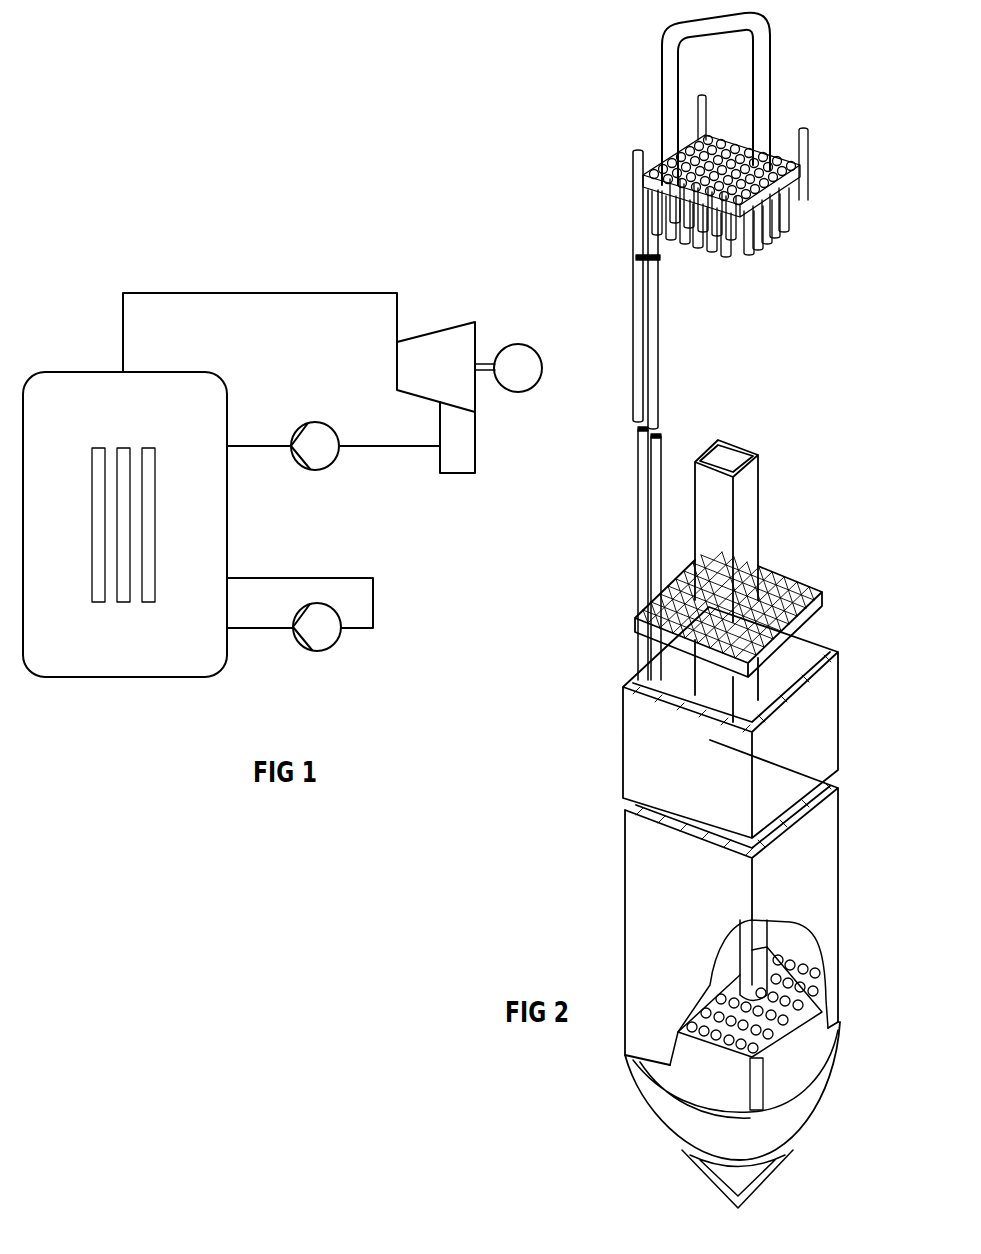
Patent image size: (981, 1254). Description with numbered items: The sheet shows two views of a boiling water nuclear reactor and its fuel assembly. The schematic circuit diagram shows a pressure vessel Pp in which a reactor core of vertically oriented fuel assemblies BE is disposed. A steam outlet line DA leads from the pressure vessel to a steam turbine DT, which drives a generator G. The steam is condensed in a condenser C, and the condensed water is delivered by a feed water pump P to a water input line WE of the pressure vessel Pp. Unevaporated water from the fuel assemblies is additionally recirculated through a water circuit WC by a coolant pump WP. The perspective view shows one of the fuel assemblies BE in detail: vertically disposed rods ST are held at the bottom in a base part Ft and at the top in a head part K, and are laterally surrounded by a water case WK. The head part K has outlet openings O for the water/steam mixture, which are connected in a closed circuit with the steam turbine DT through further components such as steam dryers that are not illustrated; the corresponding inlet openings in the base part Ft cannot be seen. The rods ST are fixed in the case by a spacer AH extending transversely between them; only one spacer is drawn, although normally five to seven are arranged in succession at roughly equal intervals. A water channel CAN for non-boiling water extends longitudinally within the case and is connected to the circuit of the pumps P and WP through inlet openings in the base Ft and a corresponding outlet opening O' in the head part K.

In FIG. 1, the pressure vessel Pp is at (130, 678).
In FIG. 1, the fuel assemblies BE is at (156, 526).
In FIG. 1, the steam outlet line DA is at (252, 293).
In FIG. 1, the steam turbine DT is at (437, 332).
In FIG. 1, the generator G is at (531, 330).
In FIG. 1, the condenser C is at (477, 444).
In FIG. 1, the water input line WE is at (242, 446).
In FIG. 1, the feed water pump P is at (322, 423).
In FIG. 1, the water circuit WC is at (315, 578).
In FIG. 1, the coolant pump WP is at (325, 651).
In FIG. 2, the head part K is at (665, 160).
In FIG. 2, the outlet openings O is at (734, 222).
In FIG. 2, the outlet opening O' is at (709, 234).
In FIG. 2, the rods ST is at (650, 499).
In FIG. 2, the water channel CAN is at (752, 512).
In FIG. 2, the spacer AH is at (650, 641).
In FIG. 2, the water case WK is at (652, 858).
In FIG. 2, the base part Ft is at (672, 1118).